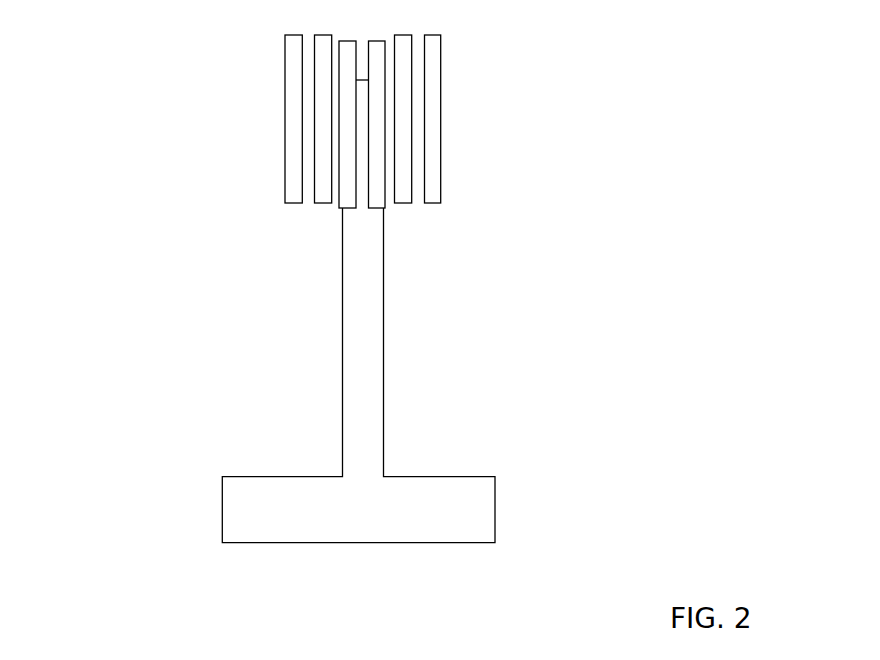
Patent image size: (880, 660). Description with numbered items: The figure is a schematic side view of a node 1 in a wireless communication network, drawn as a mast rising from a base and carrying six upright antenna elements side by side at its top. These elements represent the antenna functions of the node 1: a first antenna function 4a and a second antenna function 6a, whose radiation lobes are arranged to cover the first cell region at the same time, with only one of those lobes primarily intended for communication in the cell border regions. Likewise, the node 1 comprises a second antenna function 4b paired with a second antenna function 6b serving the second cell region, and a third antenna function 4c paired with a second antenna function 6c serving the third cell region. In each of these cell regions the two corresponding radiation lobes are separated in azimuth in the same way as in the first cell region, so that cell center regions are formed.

The node 1 is at (207, 81).
The first antenna function 4a is at (293, 138).
The second antenna function 6a is at (322, 177).
The third antenna function 4c is at (343, 97).
The second antenna function 6c is at (375, 125).
The second antenna function 4b is at (403, 152).
The second antenna function 6b is at (433, 191).